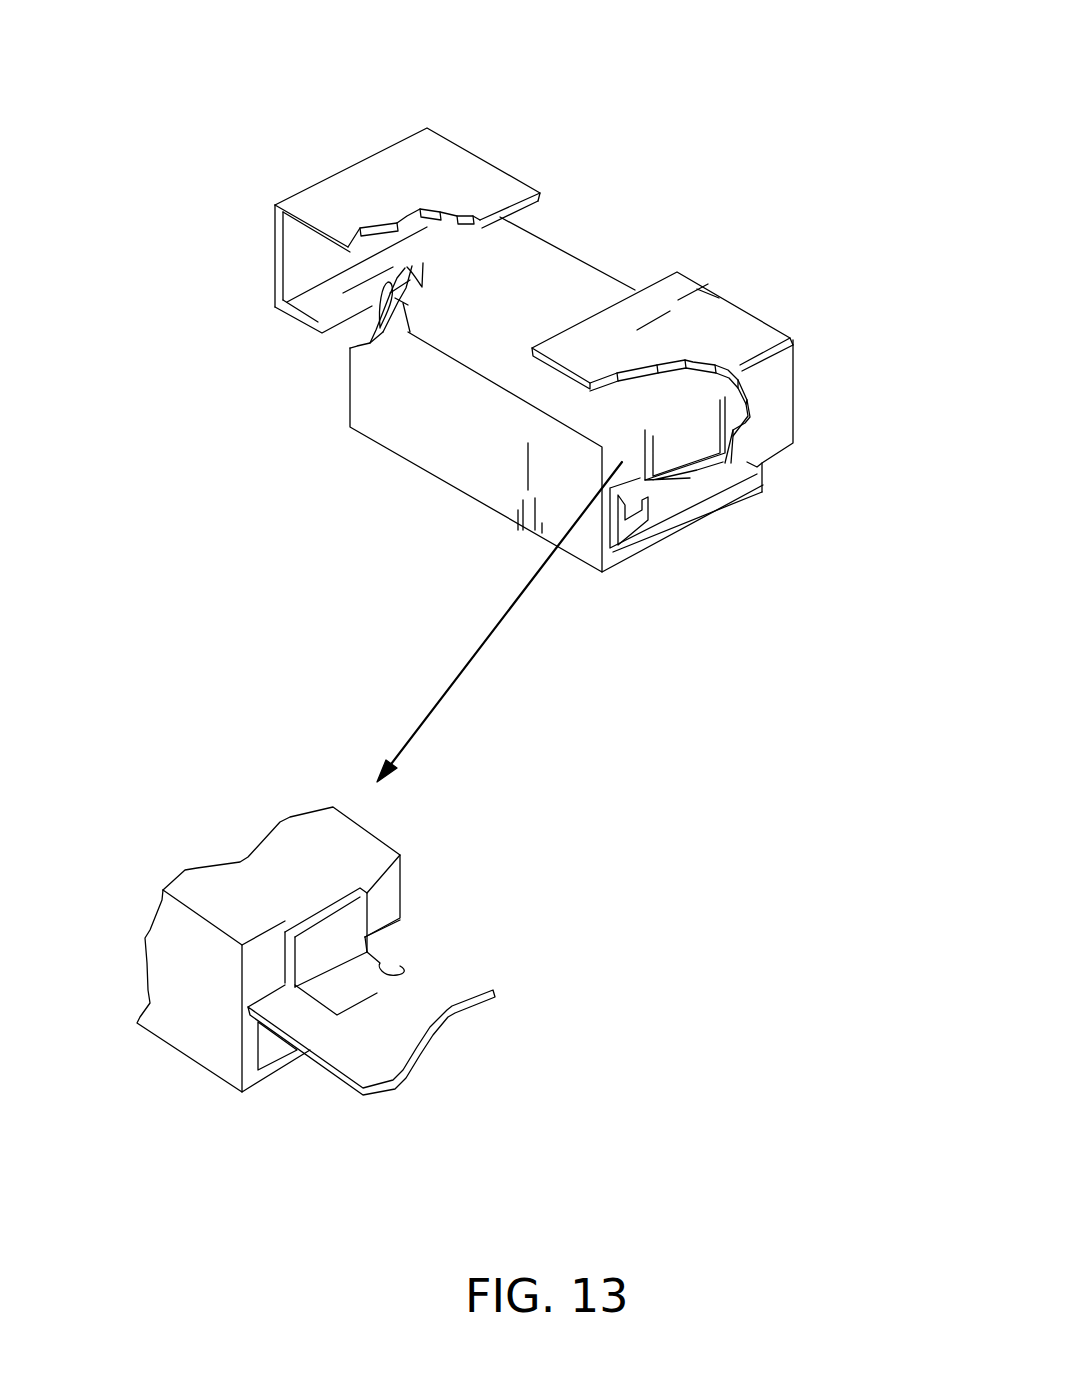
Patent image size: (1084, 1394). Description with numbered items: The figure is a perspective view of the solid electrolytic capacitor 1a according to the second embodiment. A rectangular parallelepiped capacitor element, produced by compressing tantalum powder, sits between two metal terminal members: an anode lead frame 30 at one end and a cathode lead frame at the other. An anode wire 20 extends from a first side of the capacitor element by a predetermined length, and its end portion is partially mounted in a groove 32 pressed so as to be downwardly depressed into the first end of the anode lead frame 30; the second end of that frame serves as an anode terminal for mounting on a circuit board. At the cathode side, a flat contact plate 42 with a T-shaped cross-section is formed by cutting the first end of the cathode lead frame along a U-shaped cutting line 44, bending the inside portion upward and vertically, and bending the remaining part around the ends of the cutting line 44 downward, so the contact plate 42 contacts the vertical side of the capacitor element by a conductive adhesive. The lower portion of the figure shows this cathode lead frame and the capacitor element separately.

The solid electrolytic capacitor 1a is at (685, 170).
The anode wire 20 is at (407, 333).
The anode lead frame 30 is at (423, 157).
The groove 32 is at (385, 300).
The contact plate 42 is at (352, 921).
The cutting line 44 is at (383, 970).